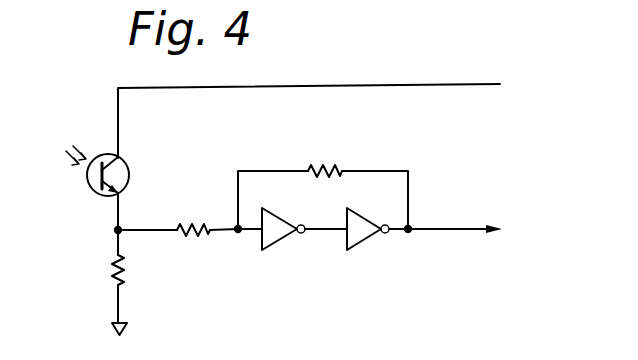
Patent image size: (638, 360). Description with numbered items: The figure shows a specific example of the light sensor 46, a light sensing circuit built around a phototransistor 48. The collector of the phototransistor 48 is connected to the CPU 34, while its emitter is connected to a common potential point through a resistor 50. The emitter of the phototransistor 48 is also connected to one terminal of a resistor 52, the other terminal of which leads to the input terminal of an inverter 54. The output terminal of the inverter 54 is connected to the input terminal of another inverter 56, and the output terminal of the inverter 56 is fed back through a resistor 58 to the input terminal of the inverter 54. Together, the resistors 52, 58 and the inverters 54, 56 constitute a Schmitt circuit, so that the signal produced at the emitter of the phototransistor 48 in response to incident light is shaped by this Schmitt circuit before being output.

The CPU 34 is at (329, 115).
The light sensor 46 is at (90, 113).
The phototransistor 48 is at (124, 165).
The resistor 50 is at (125, 279).
The resistor 52 is at (191, 226).
The inverter 54 is at (281, 239).
The inverter 56 is at (363, 240).
The resistor 58 is at (326, 166).